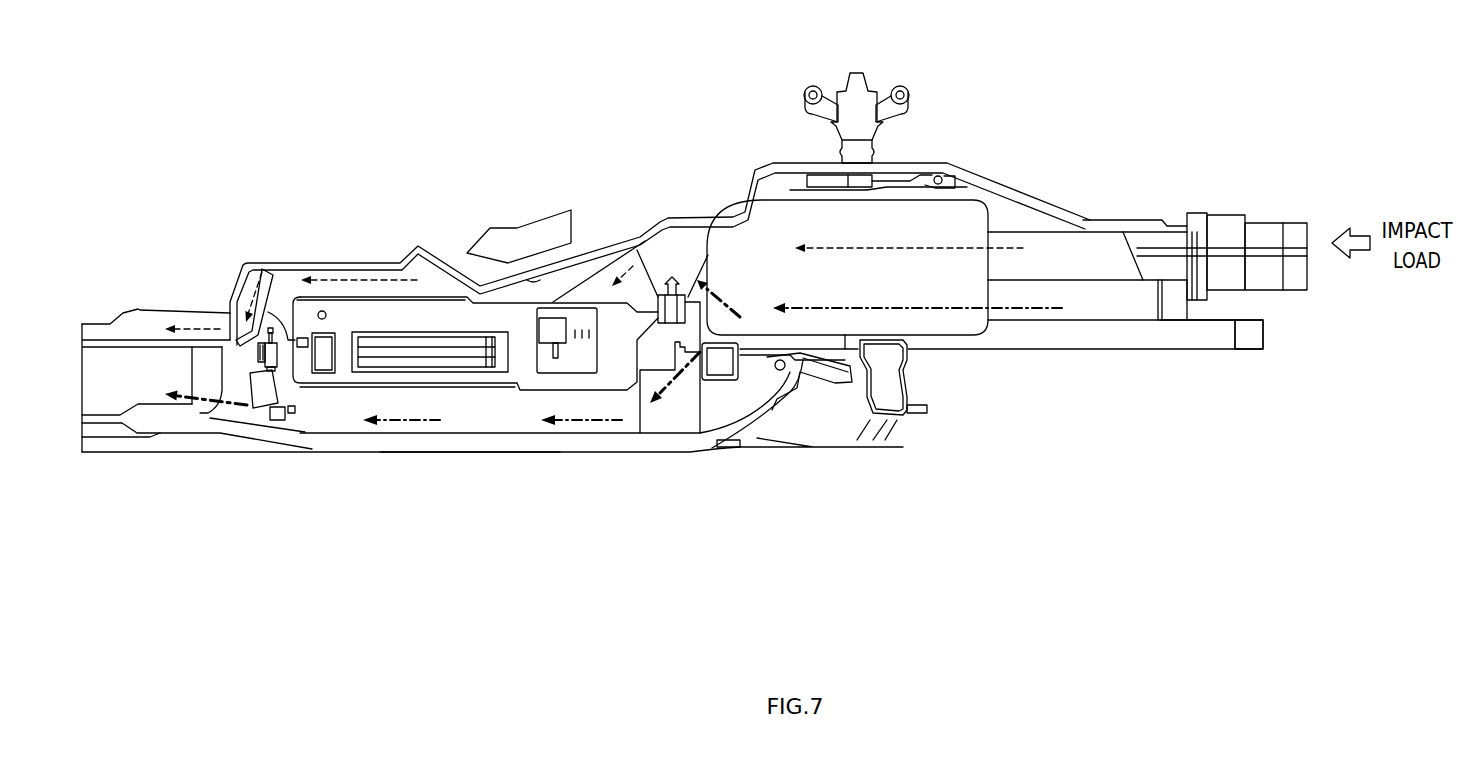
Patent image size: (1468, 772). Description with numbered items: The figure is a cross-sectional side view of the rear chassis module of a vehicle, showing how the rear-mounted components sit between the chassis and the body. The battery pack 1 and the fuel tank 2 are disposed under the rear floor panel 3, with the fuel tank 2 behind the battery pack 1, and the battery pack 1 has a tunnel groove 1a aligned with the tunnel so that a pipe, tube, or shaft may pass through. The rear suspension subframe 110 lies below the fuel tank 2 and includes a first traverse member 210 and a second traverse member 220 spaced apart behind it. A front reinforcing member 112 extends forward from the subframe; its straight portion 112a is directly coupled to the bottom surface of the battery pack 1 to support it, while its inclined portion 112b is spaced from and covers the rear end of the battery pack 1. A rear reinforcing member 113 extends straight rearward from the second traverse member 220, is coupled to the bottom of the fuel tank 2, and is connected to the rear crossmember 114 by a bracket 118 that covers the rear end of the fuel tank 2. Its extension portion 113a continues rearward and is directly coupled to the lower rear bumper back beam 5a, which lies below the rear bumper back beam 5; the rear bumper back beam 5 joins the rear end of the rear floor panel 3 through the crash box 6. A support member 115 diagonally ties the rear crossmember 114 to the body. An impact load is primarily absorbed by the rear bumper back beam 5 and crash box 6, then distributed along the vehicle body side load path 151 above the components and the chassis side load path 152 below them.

The battery pack 1 is at (315, 420).
The tunnel groove 1a is at (478, 420).
The fuel tank 2 is at (808, 217).
The rear floor panel 3 is at (448, 267).
The rear bumper back beam 5 is at (1273, 222).
The lower rear bumper back beam 5a is at (1243, 353).
The crash box 6 is at (1225, 214).
The rear suspension subframe 110 is at (794, 512).
The front reinforcing member 112 is at (521, 466).
The straight portion 112a is at (460, 457).
The inclined portion 112b is at (733, 448).
The rear reinforcing member 113 is at (1077, 352).
The extension portion 113a is at (1205, 340).
The rear crossmember 114 is at (1135, 240).
The support member 115 is at (1063, 247).
The bracket 118 is at (1157, 303).
The vehicle body side load path 151 is at (198, 332).
The chassis side load path 152 is at (716, 300).
The first traverse member 210 is at (700, 382).
The second traverse member 220 is at (890, 368).